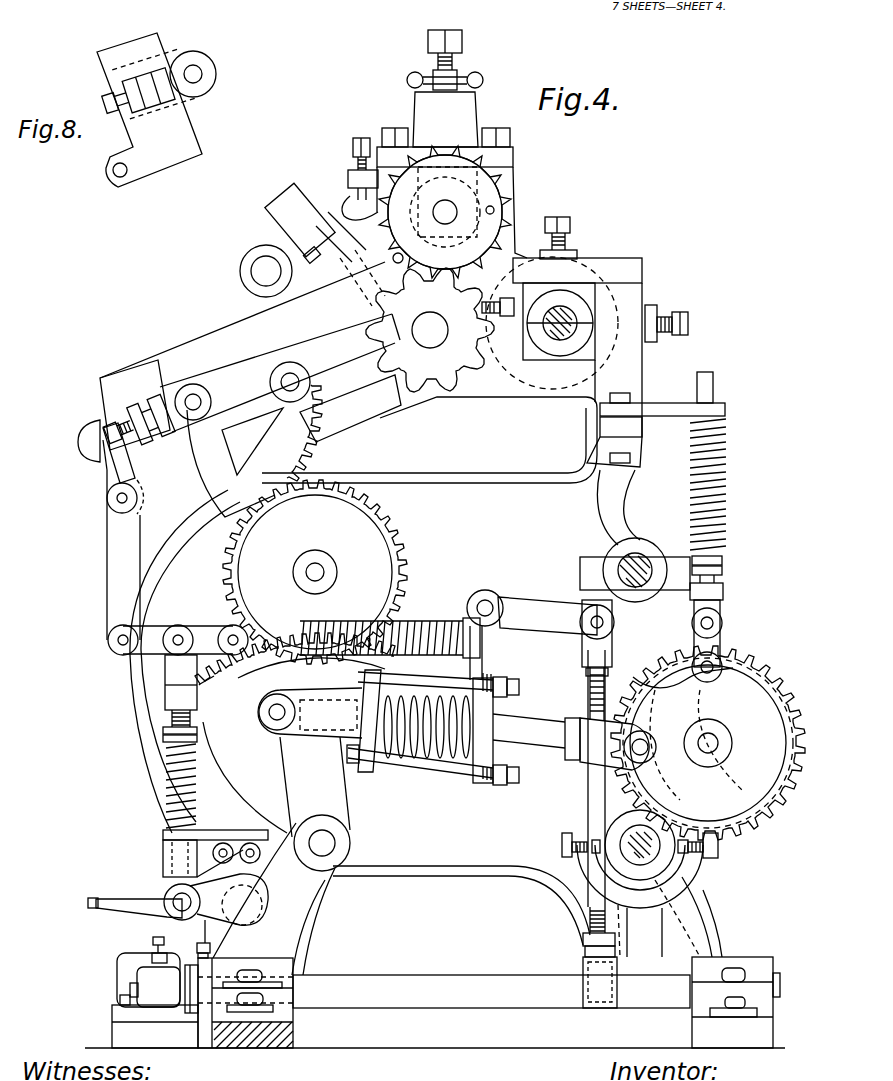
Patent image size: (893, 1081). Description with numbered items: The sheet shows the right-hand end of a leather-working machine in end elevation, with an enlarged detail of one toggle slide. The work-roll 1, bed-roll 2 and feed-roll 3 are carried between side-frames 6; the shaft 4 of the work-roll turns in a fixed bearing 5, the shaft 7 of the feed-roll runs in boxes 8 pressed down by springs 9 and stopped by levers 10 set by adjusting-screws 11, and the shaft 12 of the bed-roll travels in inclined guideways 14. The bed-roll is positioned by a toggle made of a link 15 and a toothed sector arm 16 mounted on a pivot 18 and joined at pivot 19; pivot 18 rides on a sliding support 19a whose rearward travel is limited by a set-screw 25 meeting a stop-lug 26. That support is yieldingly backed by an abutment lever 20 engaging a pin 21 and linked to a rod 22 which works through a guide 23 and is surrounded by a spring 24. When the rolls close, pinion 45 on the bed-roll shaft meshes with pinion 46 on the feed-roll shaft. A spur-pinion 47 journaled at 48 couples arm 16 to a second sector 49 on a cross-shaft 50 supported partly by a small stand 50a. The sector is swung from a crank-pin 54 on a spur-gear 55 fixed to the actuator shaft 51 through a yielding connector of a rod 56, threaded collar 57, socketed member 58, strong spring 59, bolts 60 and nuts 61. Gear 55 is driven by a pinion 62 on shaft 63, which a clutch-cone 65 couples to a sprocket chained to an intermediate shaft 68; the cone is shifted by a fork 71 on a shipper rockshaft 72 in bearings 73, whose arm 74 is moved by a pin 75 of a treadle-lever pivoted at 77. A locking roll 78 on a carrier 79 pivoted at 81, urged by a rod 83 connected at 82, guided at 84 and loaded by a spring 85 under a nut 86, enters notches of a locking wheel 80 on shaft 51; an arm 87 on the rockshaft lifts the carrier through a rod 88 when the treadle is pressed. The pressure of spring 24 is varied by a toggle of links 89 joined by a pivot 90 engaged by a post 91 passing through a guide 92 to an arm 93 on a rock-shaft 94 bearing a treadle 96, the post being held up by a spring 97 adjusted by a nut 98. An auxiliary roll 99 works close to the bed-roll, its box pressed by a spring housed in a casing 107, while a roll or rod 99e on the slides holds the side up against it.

In FIG. 8, the sliding support 19a is at (172, 56).
In FIG. 8, the set-screw 25 is at (146, 82).
In FIG. 4, the set-screw 25 is at (124, 412).
In FIG. 8, the stop-lug 26 is at (160, 107).
In FIG. 4, the stop-lug 26 is at (158, 402).
In FIG. 4, the work-roll 1 is at (592, 262).
In FIG. 4, the bed-roll 2 is at (476, 374).
In FIG. 4, the feed-roll 3 is at (505, 197).
In FIG. 4, the shaft 4 is at (558, 338).
In FIG. 4, the bearing 5 is at (582, 320).
In FIG. 4, the side-frame 6 is at (456, 484).
In FIG. 4, the shaft 7 is at (433, 208).
In FIG. 4, the box 8 is at (460, 222).
In FIG. 4, the expanding spring 9 is at (447, 164).
In FIG. 4, the lever 10 is at (346, 190).
In FIG. 4, the adjusting-screw 11 is at (352, 150).
In FIG. 4, the shaft 12 is at (424, 340).
In FIG. 4, the inclined guideway 14 is at (330, 388).
In FIG. 4, the link 15 is at (335, 362).
In FIG. 4, the arm 16 is at (235, 388).
In FIG. 4, the supporting pivot 18 is at (194, 394).
In FIG. 4, the intermediate pivot 19 is at (289, 382).
In FIG. 4, the abutment lever 20 is at (106, 545).
In FIG. 4, the pin 21 is at (97, 426).
In FIG. 4, the rod 22 is at (253, 660).
In FIG. 4, the guide 23 is at (478, 620).
In FIG. 4, the expanding spring 24 is at (402, 626).
In FIG. 4, the pinion 45 is at (422, 400).
In FIG. 4, the pinion 46 is at (500, 176).
In FIG. 4, the spur-pinion 47 is at (388, 526).
In FIG. 4, the journal 48 is at (315, 563).
In FIG. 4, the toothed sector 49 is at (236, 712).
In FIG. 4, the cross-shaft 50 is at (324, 843).
In FIG. 4, the stand 50a is at (318, 888).
In FIG. 4, the cross-shaft 51 is at (712, 742).
In FIG. 4, the crank-pin 54 is at (641, 742).
In FIG. 4, the spur-gear 55 is at (770, 668).
In FIG. 4, the rod 56 is at (546, 712).
In FIG. 4, the flanged collar 57 is at (483, 774).
In FIG. 4, the flanged member 58 is at (332, 740).
In FIG. 4, the expanding spring 59 is at (450, 760).
In FIG. 4, the bolt 60 is at (404, 682).
In FIG. 4, the nut 61 is at (506, 684).
In FIG. 4, the spur-pinion 62 is at (672, 822).
In FIG. 4, the shaft 63 is at (690, 860).
In FIG. 4, the clutch-cone 65 is at (606, 866).
In FIG. 4, the intermediate shaft 68 is at (633, 558).
In FIG. 4, the fork 71 is at (688, 882).
In FIG. 4, the shipper rockshaft 72 is at (433, 974).
In FIG. 4, the bearing 73 is at (276, 958).
In FIG. 4, the arm 74 is at (190, 1016).
In FIG. 4, the pin 75 is at (136, 986).
In FIG. 4, the pivotal bearing 77 is at (116, 968).
In FIG. 4, the locking roll 78 is at (712, 662).
In FIG. 4, the carrier 79 is at (556, 604).
In FIG. 4, the locking wheel 80 is at (726, 670).
In FIG. 4, the pivot 81 is at (488, 604).
In FIG. 4, the pivot 82 is at (712, 620).
In FIG. 4, the rod 83 is at (716, 388).
In FIG. 4, the guide 84 is at (726, 410).
In FIG. 4, the expanding spring 85 is at (727, 496).
In FIG. 4, the nut 86 is at (724, 560).
In FIG. 4, the arm 87 is at (592, 1012).
In FIG. 4, the rod 88 is at (587, 812).
In FIG. 4, the link 89 is at (182, 630).
In FIG. 4, the pivot 90 is at (190, 640).
In FIG. 4, the post 91 is at (166, 714).
In FIG. 4, the guide 92 is at (162, 836).
In FIG. 4, the arm 93 is at (204, 916).
In FIG. 4, the rock-shaft 94 is at (250, 886).
In FIG. 4, the treadle 96 is at (96, 896).
In FIG. 4, the expanding spring 97 is at (165, 808).
In FIG. 4, the nut 98 is at (162, 740).
In FIG. 4, the auxiliary roll 99 is at (362, 292).
In FIG. 4, the roll or rod 99e is at (240, 272).
In FIG. 4, the casing 107 is at (244, 228).